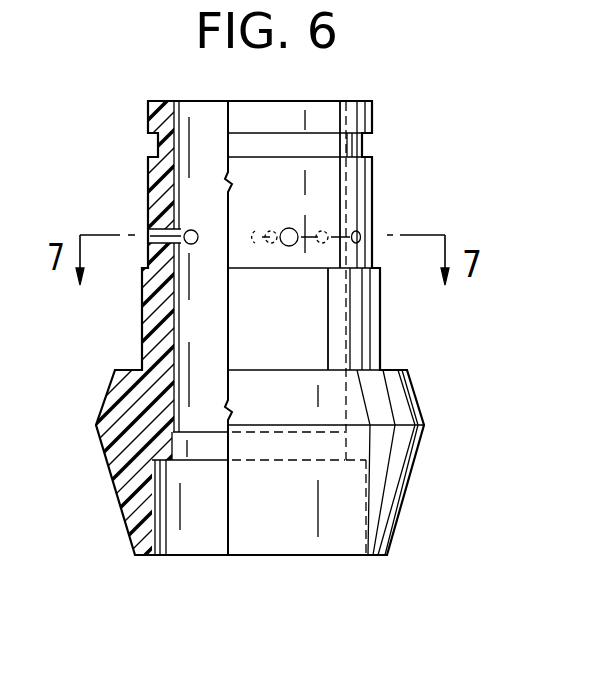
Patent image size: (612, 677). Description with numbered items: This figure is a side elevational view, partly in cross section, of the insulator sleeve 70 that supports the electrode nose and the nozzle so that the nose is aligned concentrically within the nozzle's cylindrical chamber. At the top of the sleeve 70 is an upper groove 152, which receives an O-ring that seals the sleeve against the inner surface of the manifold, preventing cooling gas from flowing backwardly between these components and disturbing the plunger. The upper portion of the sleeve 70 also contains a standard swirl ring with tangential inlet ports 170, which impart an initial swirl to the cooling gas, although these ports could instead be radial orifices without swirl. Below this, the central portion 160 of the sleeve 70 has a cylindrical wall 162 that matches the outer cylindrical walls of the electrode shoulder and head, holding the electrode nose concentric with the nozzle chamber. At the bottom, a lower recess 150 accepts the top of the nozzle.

The insulator sleeve 70 is at (384, 178).
The upper groove 152 is at (367, 142).
The tangential inlet ports 170 is at (150, 233).
The cylindrical wall 162 is at (176, 294).
The central portion 160 is at (381, 331).
The lower recess 150 is at (153, 518).